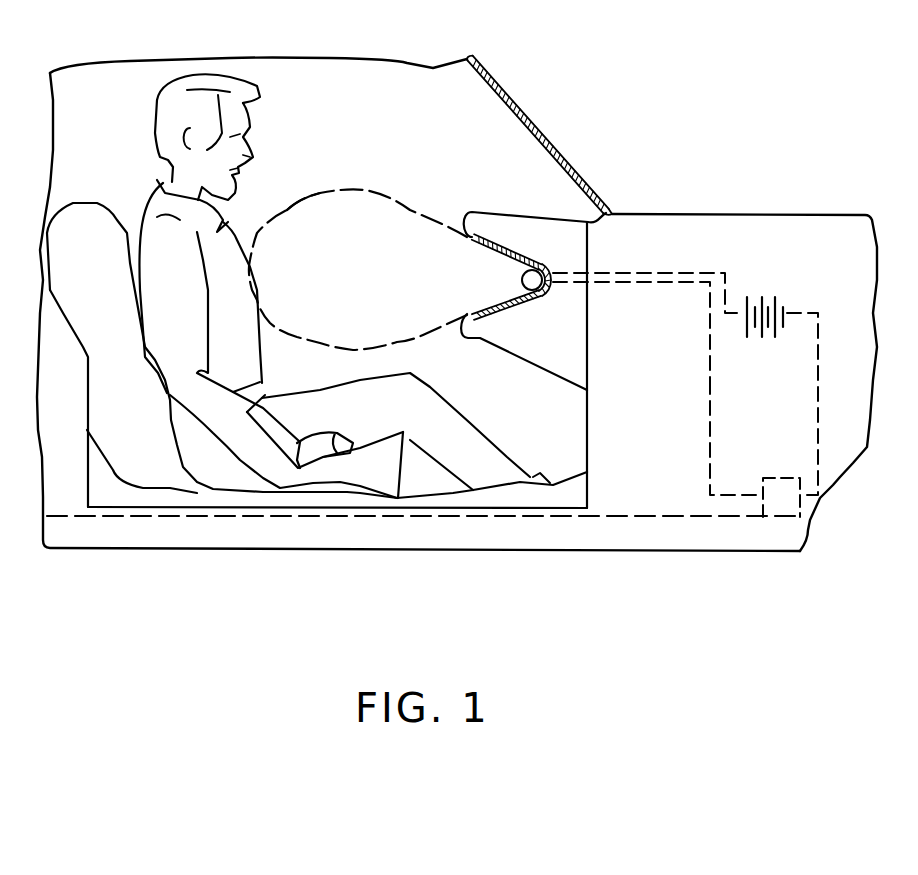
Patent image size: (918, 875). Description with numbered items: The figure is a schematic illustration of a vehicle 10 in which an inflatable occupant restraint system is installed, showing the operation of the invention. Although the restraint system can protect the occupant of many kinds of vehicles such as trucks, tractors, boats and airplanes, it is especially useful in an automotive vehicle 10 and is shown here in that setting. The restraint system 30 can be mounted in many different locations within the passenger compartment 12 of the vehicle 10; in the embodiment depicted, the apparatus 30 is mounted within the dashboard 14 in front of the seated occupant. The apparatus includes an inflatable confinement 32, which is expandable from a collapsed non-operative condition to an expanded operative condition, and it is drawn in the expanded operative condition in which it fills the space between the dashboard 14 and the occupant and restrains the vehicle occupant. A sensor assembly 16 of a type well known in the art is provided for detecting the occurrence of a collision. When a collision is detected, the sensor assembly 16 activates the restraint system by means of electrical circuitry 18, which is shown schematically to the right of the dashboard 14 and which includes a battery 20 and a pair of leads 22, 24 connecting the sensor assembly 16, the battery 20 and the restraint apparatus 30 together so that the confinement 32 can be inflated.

The vehicle 10 is at (148, 58).
The passenger compartment 12 is at (423, 286).
The dashboard 14 is at (497, 228).
The sensor assembly 16 is at (792, 477).
The electrical circuitry 18 is at (731, 275).
The battery 20 is at (785, 307).
The lead 22 is at (710, 360).
The lead 24 is at (817, 360).
The restraint system 30 is at (358, 269).
The inflatable confinement 32 is at (288, 209).